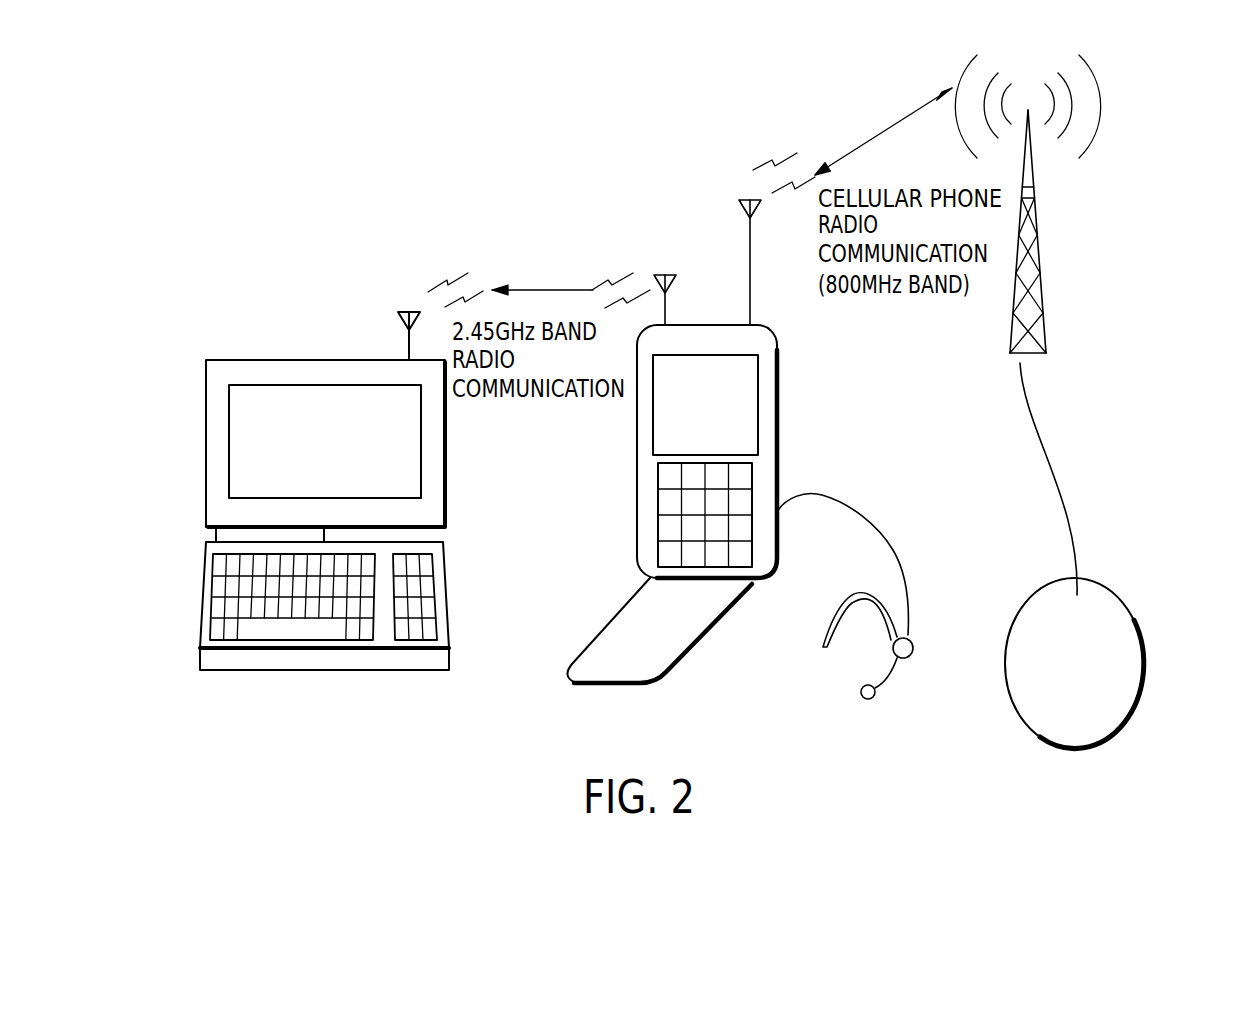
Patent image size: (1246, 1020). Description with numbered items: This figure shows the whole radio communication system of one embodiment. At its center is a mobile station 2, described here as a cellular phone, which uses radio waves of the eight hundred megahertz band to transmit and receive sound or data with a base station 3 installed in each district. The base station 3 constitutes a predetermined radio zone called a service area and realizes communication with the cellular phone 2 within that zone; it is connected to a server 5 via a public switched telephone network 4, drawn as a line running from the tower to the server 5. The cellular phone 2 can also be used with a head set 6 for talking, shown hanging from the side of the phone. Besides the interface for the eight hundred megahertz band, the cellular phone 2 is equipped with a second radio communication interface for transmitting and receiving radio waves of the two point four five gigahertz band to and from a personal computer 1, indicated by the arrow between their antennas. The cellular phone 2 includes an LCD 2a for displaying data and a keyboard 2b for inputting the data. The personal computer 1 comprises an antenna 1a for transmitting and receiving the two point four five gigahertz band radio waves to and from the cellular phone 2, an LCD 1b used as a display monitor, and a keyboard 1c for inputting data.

The personal computer 1 is at (323, 507).
The antenna 1a is at (400, 338).
The LCD 1b is at (254, 447).
The keyboard 1c is at (232, 590).
The mobile station 2 is at (698, 441).
The LCD 2a is at (668, 428).
The keyboard 2b is at (668, 504).
The base station 3 is at (1036, 222).
The public switched telephone network 4 is at (1027, 410).
The server 5 is at (1144, 668).
The head set 6 is at (893, 679).